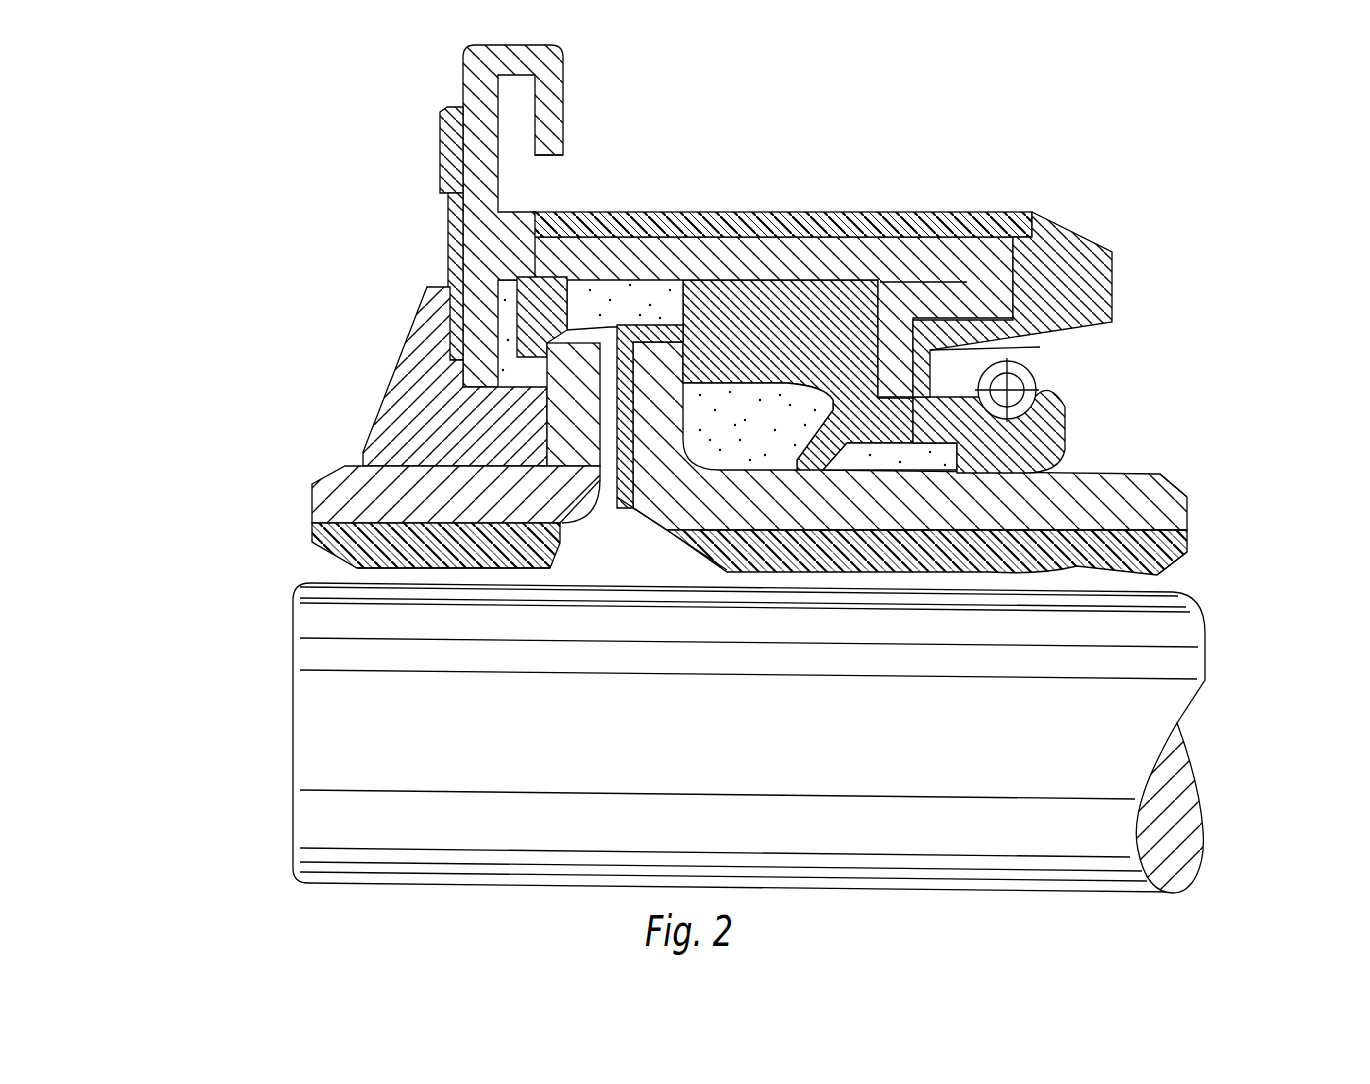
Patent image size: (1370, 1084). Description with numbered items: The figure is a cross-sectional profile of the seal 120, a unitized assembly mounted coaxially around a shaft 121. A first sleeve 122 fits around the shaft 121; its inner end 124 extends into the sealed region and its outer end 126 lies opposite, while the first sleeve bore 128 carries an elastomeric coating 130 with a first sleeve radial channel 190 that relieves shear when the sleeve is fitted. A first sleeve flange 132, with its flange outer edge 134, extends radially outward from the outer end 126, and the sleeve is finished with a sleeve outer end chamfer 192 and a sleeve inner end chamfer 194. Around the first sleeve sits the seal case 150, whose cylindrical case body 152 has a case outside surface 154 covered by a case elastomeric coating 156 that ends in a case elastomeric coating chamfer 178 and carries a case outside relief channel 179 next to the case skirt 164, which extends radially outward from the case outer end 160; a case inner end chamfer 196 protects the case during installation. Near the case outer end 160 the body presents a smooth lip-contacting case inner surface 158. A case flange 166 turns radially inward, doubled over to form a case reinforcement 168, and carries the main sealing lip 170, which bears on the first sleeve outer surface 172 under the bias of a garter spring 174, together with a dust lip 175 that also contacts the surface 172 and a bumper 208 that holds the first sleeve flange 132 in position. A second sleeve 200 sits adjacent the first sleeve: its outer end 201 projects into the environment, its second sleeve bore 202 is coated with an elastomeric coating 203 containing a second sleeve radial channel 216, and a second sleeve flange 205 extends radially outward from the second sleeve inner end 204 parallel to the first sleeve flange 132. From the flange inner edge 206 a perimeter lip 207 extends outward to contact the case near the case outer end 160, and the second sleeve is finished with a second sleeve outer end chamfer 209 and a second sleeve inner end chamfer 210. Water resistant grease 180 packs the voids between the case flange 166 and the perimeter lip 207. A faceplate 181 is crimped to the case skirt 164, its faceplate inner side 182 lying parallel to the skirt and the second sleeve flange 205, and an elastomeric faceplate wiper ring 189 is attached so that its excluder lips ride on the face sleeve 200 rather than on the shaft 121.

The seal 120 is at (447, 216).
The shaft 121 is at (330, 771).
The first sleeve 122 is at (968, 493).
The first sleeve inner end 124 is at (1188, 515).
The first sleeve outer end 126 is at (660, 520).
The first sleeve bore 128 is at (887, 513).
The sleeve bore elastomeric coating 130 is at (1165, 566).
The first sleeve flange 132 is at (660, 484).
The first sleeve flange outer edge 134 is at (685, 298).
The seal case 150 is at (900, 274).
The case body 152 is at (913, 257).
The case outside surface 154 is at (995, 212).
The case elastomeric coating 156 is at (1040, 258).
The case inner surface 158 is at (462, 265).
The case outer end 160 is at (560, 208).
The case skirt 164 is at (547, 166).
The case flange 166 is at (980, 363).
The case reinforcement 168 is at (1027, 321).
The main sealing lip 170 is at (1025, 452).
The first sleeve outer surface 172 is at (1152, 474).
The garter spring 174 is at (1033, 367).
The dust lip 175 is at (827, 471).
The case elastomeric coating chamfer 178 is at (1092, 240).
The case outside relief channel 179 is at (648, 212).
The water resistant grease 180 is at (770, 437).
The faceplate 181 is at (407, 88).
The faceplate inner side 182 is at (500, 299).
The faceplate wiper ring 189 is at (424, 345).
The first sleeve radial channel 190 is at (1040, 572).
The sleeve outer end chamfer 192 is at (650, 522).
The sleeve inner end chamfer 194 is at (1187, 553).
The case inner end chamfer 196 is at (1027, 286).
The second sleeve 200 is at (392, 555).
The second sleeve outer end 201 is at (312, 487).
The second sleeve bore 202 is at (398, 497).
The second sleeve bore elastomeric coating 203 is at (312, 540).
The second sleeve inner end 204 is at (585, 505).
The second sleeve flange 205 is at (455, 385).
The second sleeve flange inner edge 206 is at (560, 385).
The perimeter lip 207 is at (457, 318).
The bumper 208 is at (742, 292).
The second sleeve outer end chamfer 209 is at (352, 567).
The second sleeve inner end chamfer 210 is at (598, 520).
The second sleeve radial channel 216 is at (437, 560).